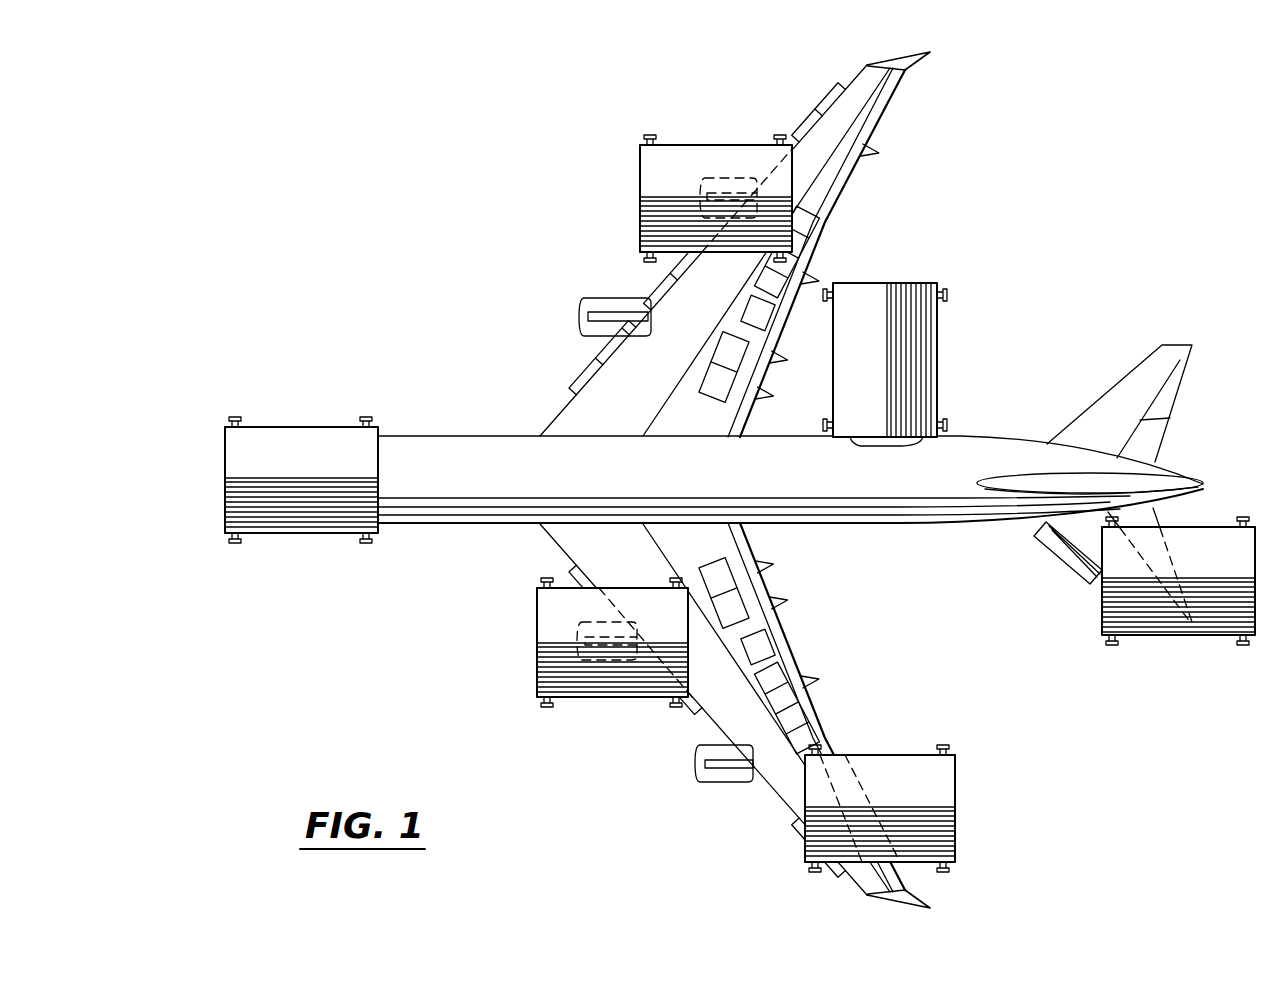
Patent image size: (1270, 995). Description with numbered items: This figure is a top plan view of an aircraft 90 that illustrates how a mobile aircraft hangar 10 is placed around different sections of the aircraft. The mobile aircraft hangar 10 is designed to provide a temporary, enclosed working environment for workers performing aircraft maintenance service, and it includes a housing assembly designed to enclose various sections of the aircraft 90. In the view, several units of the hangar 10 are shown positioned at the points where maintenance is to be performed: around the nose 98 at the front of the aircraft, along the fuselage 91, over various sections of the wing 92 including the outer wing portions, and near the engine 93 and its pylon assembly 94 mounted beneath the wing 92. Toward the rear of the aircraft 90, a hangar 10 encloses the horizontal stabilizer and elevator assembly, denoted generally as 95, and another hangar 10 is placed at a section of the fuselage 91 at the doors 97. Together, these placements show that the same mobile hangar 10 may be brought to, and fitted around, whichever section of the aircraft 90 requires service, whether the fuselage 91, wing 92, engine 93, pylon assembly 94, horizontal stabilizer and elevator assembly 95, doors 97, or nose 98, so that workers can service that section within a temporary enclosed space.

The mobile aircraft hangar 10 is at (238, 445).
The aircraft 90 is at (790, 483).
The fuselage 91 is at (478, 527).
The wing 92 is at (855, 125).
The engine 93 is at (600, 325).
The pylon assembly 94 is at (640, 313).
The horizontal stabilizer and elevator assembly 95 is at (1060, 555).
The doors 97 is at (893, 452).
The nose 98 is at (318, 462).